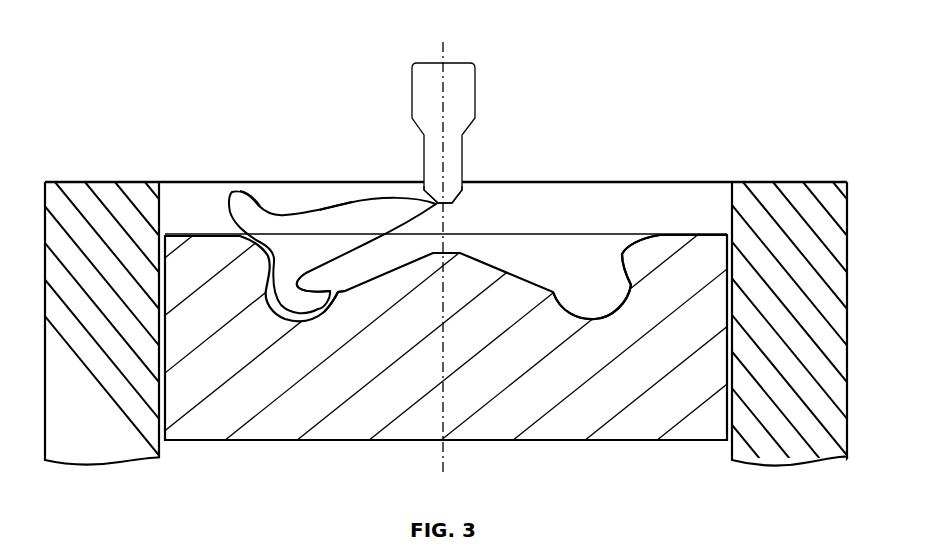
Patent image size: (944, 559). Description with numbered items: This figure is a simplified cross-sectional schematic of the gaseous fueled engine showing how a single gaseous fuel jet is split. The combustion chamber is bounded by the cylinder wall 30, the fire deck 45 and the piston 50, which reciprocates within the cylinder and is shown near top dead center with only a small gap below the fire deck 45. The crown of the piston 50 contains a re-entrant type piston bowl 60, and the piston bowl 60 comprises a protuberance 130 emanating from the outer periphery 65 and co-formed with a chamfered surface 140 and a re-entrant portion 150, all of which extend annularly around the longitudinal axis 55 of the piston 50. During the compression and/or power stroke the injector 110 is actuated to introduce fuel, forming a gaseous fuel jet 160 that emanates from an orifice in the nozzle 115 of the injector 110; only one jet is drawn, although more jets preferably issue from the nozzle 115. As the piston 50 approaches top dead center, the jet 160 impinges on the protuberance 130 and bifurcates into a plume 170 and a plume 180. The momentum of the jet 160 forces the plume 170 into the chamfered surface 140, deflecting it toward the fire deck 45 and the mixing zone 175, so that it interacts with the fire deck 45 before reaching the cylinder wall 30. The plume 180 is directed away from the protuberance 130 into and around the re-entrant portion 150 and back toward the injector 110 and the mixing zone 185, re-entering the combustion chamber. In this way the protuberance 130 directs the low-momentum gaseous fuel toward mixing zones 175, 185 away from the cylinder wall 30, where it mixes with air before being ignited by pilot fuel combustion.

The cylinder wall 30 is at (165, 210).
The fire deck 45 is at (570, 181).
The piston 50 is at (248, 441).
The longitudinal axis 55 is at (445, 452).
The piston bowl 60 is at (523, 234).
The outer periphery 65 is at (630, 284).
The injector 110 is at (443, 66).
The nozzle 115 is at (462, 202).
The protuberance 130 is at (619, 252).
The chamfered surface 140 is at (637, 236).
The re-entrant portion 150 is at (610, 314).
The gaseous fuel jet 160 is at (352, 200).
The plume 170 is at (231, 195).
The mixing zone 175 is at (251, 185).
The plume 180 is at (327, 291).
The mixing zone 185 is at (322, 270).